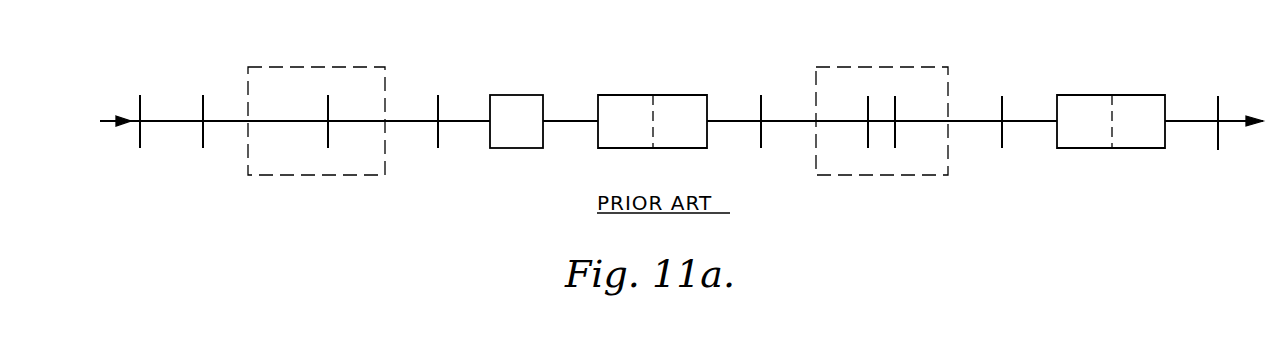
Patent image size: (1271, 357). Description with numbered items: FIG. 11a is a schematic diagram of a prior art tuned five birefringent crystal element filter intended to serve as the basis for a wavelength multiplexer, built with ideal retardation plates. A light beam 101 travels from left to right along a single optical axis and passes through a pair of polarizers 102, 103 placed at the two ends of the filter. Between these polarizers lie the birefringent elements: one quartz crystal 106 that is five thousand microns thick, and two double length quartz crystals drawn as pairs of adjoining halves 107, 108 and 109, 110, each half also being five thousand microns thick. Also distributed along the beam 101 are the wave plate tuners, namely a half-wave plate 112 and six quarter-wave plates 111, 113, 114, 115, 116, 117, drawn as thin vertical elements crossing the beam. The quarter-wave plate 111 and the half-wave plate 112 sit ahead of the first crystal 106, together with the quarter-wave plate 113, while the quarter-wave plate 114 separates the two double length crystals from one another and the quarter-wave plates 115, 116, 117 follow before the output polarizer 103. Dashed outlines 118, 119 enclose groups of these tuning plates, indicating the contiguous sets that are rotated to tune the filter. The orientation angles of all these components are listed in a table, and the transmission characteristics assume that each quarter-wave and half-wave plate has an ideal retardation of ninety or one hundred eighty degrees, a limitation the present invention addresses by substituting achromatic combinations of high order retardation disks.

The light beam 101 is at (175, 123).
The polarizer 102 is at (140, 102).
The polarizer 103 is at (1218, 102).
The quartz crystal 106 is at (517, 95).
The quartz crystal half 107 is at (618, 95).
The quartz crystal half 108 is at (685, 95).
The quartz crystal half 109 is at (1080, 95).
The quartz crystal half 110 is at (1137, 95).
The quarter-wave plate 111 is at (203, 102).
The half-wave plate 112 is at (328, 102).
The quarter-wave plate 113 is at (438, 102).
The quarter-wave plate 114 is at (761, 102).
The quarter-wave plate 115 is at (868, 110).
The quarter-wave plate 116 is at (895, 110).
The quarter-wave plate 117 is at (1002, 102).
The optical unit 118 is at (337, 67).
The optical unit 119 is at (878, 67).